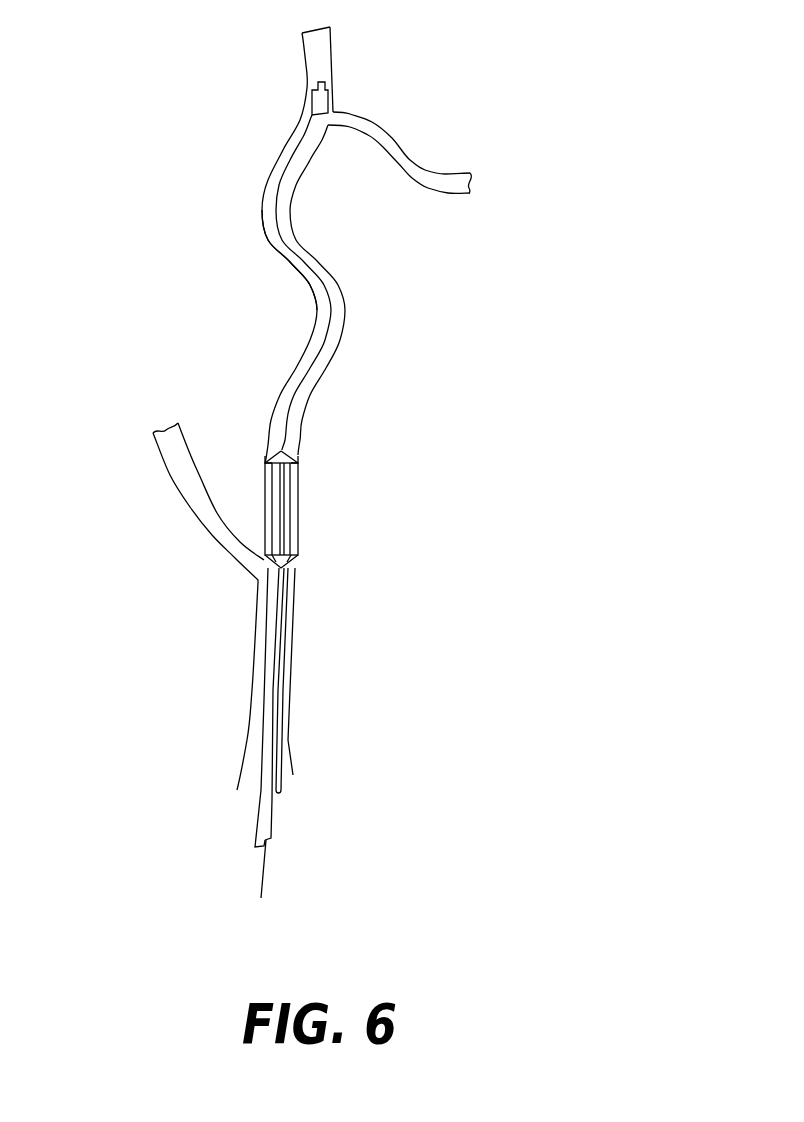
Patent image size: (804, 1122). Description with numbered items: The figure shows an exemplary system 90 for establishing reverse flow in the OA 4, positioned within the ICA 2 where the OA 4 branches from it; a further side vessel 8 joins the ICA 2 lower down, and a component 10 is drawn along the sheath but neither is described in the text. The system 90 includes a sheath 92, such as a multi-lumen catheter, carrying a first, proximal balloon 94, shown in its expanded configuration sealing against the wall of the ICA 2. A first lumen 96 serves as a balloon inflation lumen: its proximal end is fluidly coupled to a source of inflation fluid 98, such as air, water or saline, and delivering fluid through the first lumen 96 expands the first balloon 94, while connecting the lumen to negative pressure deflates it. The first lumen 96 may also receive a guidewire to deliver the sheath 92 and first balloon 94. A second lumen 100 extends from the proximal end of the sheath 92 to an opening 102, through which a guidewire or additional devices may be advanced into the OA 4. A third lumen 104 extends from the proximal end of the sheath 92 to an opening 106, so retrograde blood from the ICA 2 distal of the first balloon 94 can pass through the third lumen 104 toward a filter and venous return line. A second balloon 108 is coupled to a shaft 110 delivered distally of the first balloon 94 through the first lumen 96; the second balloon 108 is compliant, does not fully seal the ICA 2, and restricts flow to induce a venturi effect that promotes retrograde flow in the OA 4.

The second balloon 108 is at (340, 84).
The OA 4 is at (402, 137).
The ICA 2 is at (290, 282).
The system 90 is at (124, 269).
The shaft 110 is at (305, 373).
The side branch vessel 8 is at (175, 492).
The opening 106 is at (267, 456).
The opening 102 is at (300, 456).
The first balloon 94 is at (320, 505).
The sheath 92 is at (302, 706).
The inner catheter shaft 10 is at (292, 645).
The second lumen 100 is at (283, 788).
The first lumen 96 is at (274, 808).
The third lumen 104 is at (259, 809).
The source of inflation fluid 98 is at (276, 840).